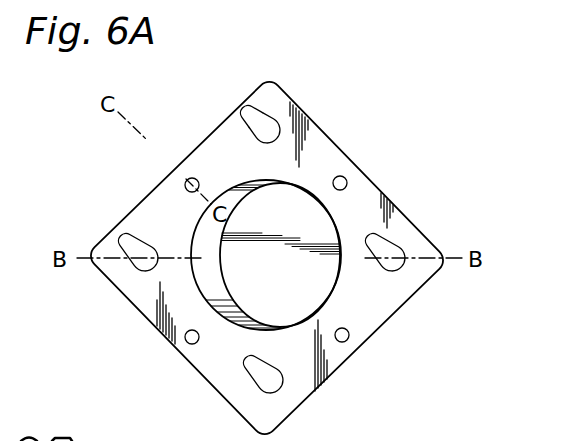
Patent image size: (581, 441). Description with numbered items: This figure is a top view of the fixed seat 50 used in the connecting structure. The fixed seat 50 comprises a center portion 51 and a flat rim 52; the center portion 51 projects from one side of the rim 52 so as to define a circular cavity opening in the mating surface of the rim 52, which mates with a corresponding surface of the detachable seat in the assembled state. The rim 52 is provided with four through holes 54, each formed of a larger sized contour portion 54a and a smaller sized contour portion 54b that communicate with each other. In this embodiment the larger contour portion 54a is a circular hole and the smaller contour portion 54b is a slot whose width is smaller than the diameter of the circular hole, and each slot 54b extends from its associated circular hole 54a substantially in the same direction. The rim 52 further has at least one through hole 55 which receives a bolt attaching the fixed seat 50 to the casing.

The fixed seat 50 is at (394, 88).
The center portion 51 is at (203, 228).
The flat rim 52 is at (373, 193).
The through holes 54 is at (251, 248).
The larger sized contour portion 54a is at (276, 120).
The smaller sized contour portion 54b is at (243, 104).
The through hole 55 is at (343, 177).